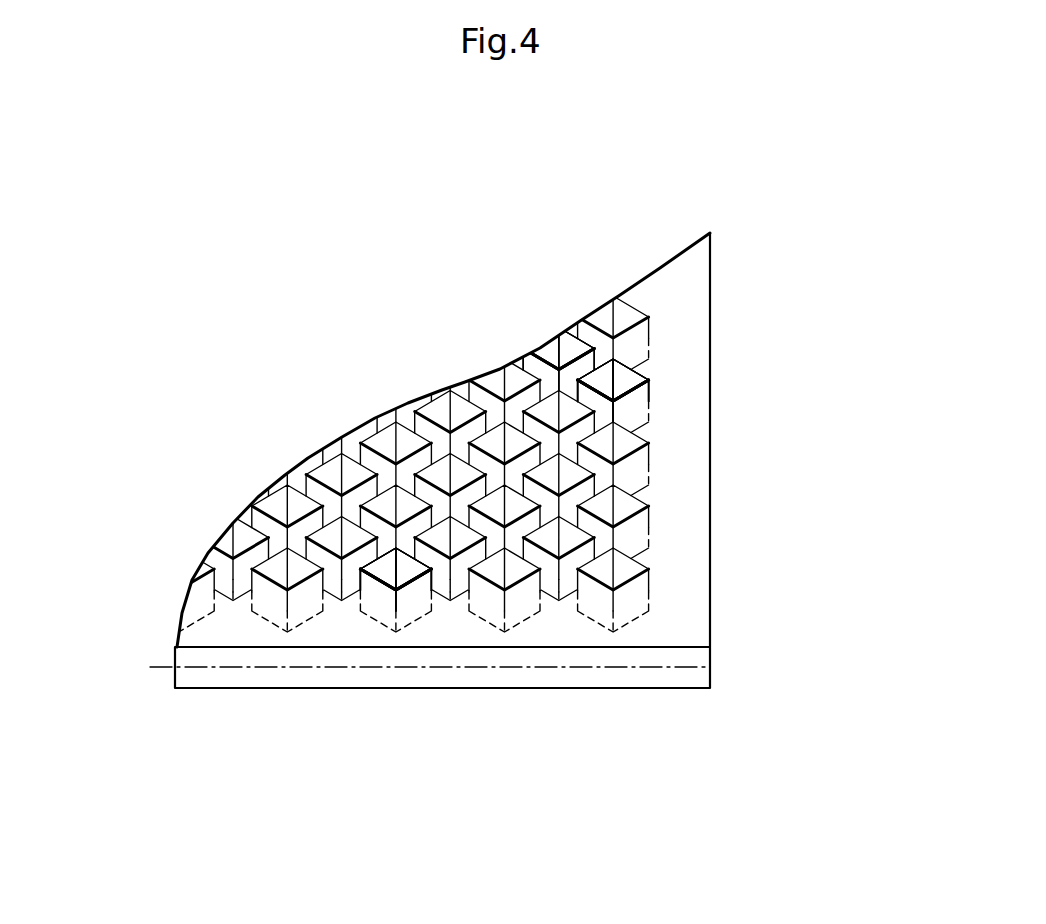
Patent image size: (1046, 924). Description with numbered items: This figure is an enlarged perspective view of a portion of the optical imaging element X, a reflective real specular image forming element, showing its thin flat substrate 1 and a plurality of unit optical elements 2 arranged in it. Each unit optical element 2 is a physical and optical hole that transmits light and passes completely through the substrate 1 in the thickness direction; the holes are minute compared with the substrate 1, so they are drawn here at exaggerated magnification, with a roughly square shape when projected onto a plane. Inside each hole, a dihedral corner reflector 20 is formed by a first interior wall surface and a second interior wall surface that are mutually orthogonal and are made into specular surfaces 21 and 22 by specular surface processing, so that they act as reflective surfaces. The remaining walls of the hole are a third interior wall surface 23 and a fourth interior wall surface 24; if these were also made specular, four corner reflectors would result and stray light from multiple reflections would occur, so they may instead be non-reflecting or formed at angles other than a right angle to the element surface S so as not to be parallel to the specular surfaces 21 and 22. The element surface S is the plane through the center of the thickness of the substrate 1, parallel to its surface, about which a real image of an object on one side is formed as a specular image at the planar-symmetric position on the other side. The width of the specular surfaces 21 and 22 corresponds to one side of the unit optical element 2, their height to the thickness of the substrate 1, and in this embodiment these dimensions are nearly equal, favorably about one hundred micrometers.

The substrate 1 is at (709, 467).
The unit optical element 2 is at (443, 410).
The optical imaging element X is at (515, 533).
The element surface S is at (257, 663).
The dihedral corner reflector 20 is at (813, 338).
The specular surface 21 is at (620, 378).
The specular surface 22 is at (633, 392).
The third interior wall surface 23 is at (577, 348).
The fourth interior wall surface 24 is at (545, 355).